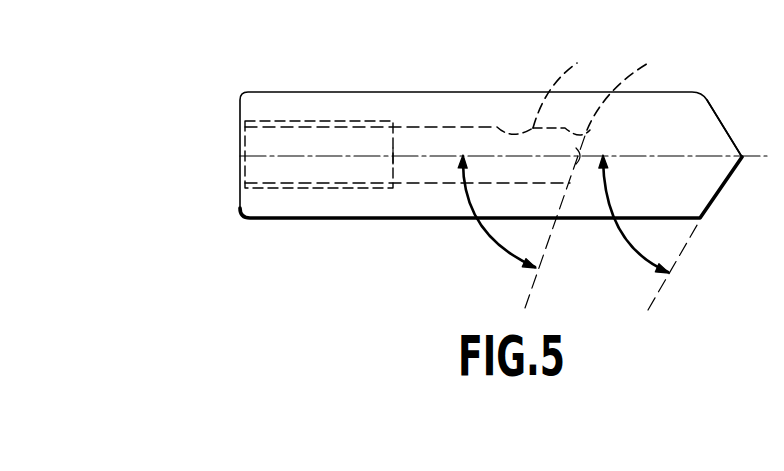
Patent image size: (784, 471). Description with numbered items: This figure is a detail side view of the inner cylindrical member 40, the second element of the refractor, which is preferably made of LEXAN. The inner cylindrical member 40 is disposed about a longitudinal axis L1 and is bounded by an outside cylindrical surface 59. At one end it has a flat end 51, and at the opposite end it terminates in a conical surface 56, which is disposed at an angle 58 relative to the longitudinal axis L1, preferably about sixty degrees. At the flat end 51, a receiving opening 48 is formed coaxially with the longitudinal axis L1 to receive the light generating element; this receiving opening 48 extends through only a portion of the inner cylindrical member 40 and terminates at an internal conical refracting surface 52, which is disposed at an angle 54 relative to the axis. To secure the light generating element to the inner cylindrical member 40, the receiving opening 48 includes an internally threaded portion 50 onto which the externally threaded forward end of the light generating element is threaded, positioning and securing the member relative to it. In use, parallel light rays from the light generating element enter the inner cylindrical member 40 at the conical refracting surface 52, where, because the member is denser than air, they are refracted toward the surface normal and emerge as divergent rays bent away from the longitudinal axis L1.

The inner cylindrical member 40 is at (457, 92).
The receiving opening 48 is at (554, 91).
The internally threaded portion 50 is at (230, 130).
The flat end 51 is at (240, 183).
The conical refracting surface 52 is at (605, 179).
The angle 54 is at (497, 243).
The conical surface 56 is at (717, 110).
The angle 58 is at (628, 244).
The outside cylindrical surface 59 is at (385, 218).
The longitudinal axis L1 is at (240, 156).